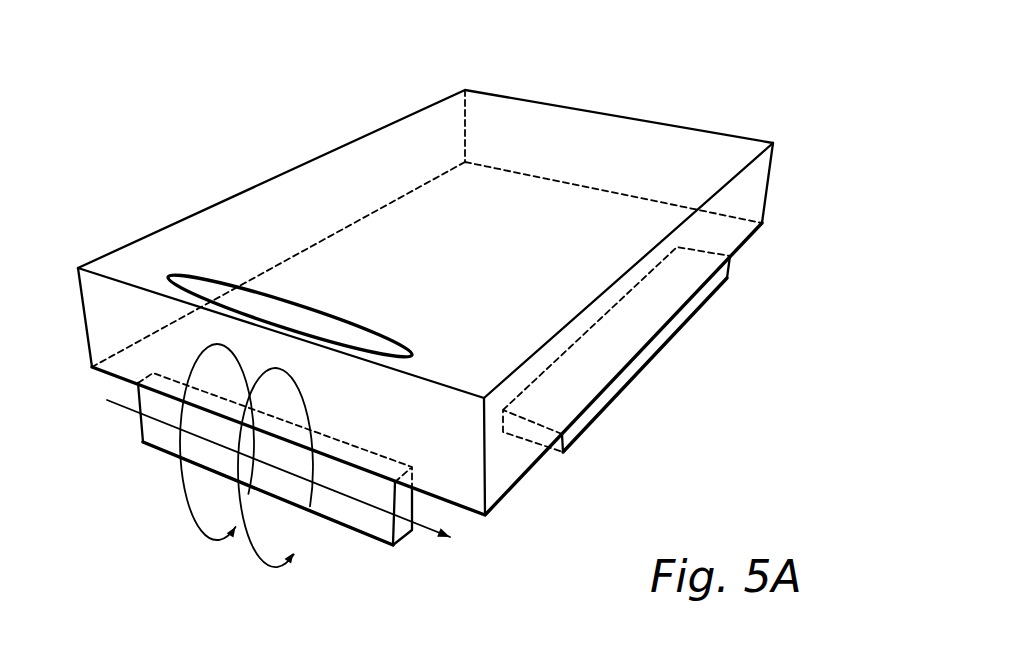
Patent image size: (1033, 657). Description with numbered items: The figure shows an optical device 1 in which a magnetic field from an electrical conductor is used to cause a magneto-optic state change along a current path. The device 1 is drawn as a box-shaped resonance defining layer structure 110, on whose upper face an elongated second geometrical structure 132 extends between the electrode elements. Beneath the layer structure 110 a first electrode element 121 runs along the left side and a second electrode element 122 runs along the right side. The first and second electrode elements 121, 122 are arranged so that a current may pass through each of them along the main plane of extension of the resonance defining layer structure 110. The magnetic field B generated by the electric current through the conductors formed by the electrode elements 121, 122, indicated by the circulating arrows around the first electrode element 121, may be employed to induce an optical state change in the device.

The device 1 is at (436, 315).
The resonance defining layer structure 110 is at (590, 117).
The first electrode element 121 is at (173, 440).
The second electrode element 122 is at (694, 301).
The second geometrical structure 132 is at (281, 292).
The magnetic field B is at (252, 548).